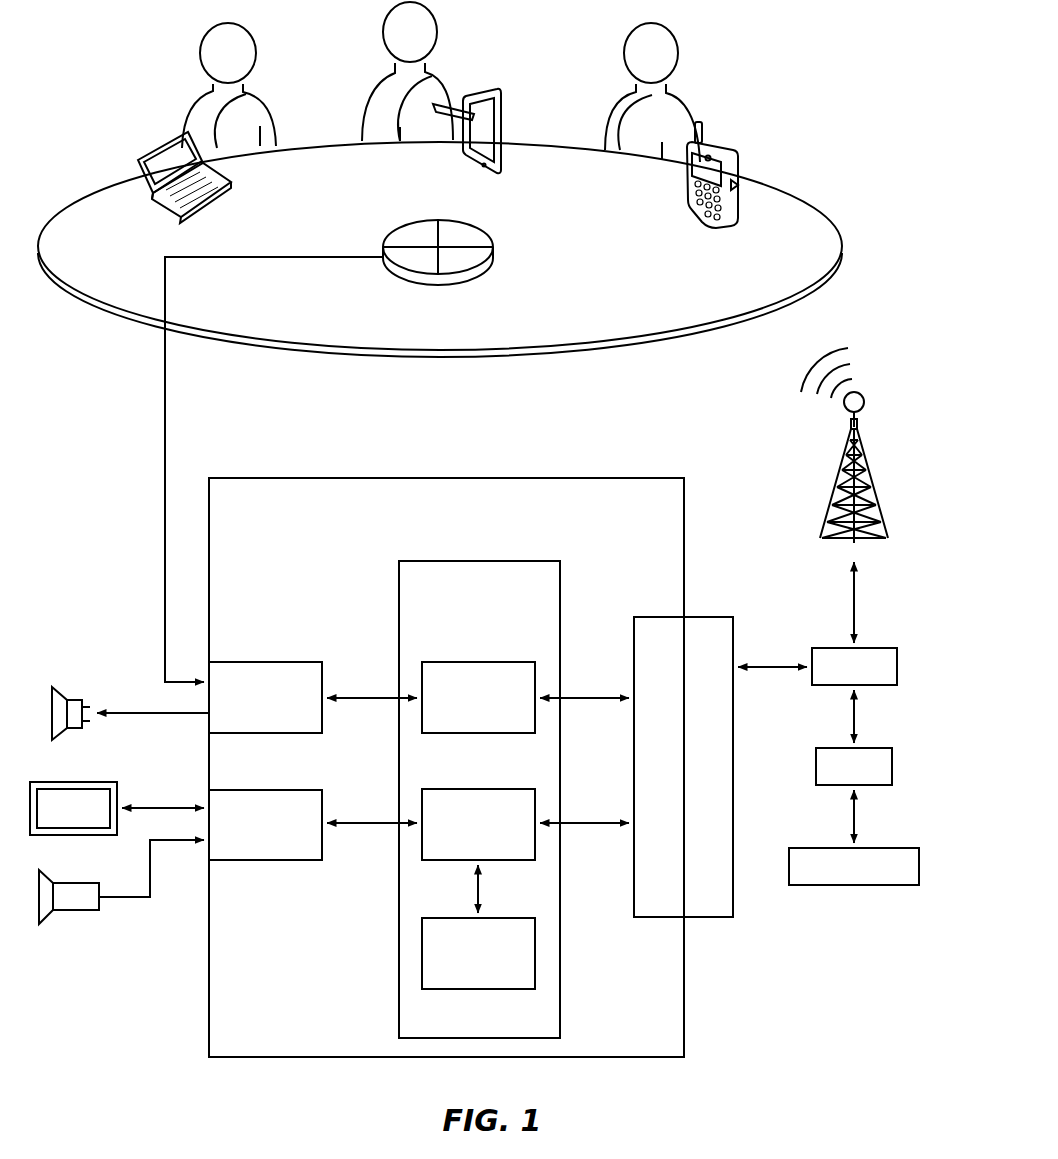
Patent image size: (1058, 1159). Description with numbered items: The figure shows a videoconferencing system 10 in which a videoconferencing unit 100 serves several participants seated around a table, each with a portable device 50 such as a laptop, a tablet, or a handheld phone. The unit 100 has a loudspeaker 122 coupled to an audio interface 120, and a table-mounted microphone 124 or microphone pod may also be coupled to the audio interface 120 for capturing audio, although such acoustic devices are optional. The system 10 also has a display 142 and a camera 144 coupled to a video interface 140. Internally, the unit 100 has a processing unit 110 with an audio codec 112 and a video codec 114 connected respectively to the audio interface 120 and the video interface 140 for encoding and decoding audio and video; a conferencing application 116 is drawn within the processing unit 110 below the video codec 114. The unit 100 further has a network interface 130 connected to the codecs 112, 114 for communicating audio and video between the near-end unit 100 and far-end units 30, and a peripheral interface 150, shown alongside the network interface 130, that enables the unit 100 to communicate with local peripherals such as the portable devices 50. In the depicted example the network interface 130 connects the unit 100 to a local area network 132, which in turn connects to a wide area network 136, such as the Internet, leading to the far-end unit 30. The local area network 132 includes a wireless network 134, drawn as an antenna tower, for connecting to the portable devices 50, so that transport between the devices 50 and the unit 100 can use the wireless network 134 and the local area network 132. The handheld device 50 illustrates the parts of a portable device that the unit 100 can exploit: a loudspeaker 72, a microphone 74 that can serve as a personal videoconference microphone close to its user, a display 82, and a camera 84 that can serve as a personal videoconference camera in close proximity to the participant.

The videoconferencing system 10 is at (728, 58).
The far-end unit 30 is at (882, 848).
The portable device 50 is at (166, 140).
The loudspeaker 72 is at (712, 144).
The microphone 74 is at (705, 224).
The display 82 is at (690, 168).
The camera 84 is at (740, 186).
The videoconferencing unit 100 is at (580, 478).
The processing unit 110 is at (480, 561).
The audio codec 112 is at (480, 662).
The video codec 114 is at (480, 789).
The conferencing application 116 is at (478, 989).
The audio interface 120 is at (266, 662).
The loudspeaker 122 is at (77, 700).
The table-mounted microphone 124 is at (464, 236).
The network interface 130 is at (708, 917).
The local area network 132 is at (876, 648).
The wireless network 134 is at (838, 490).
The wide area network 136 is at (876, 748).
The video interface 140 is at (266, 790).
The display 142 is at (72, 782).
The camera 144 is at (77, 912).
The peripheral interface 150 is at (660, 917).